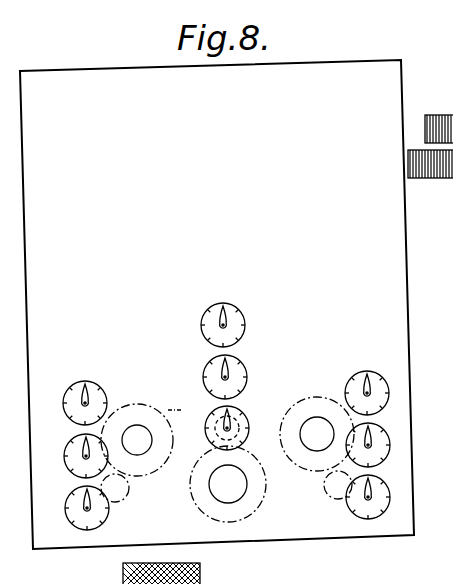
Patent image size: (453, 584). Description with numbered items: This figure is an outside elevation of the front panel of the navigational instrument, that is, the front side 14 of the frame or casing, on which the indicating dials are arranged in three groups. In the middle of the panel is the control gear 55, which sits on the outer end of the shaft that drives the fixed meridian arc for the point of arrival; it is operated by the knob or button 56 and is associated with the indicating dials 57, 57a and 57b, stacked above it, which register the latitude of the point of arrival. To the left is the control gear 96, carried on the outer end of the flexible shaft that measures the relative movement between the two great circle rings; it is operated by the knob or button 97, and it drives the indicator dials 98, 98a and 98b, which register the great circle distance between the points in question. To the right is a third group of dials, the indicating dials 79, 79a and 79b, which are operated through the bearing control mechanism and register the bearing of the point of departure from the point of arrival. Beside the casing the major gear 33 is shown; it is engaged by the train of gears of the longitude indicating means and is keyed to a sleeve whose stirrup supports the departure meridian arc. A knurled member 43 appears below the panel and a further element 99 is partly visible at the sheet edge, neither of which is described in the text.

The front side 14 is at (390, 292).
The major gear 33 is at (437, 178).
The knurled knob 43 is at (200, 573).
The control gear 55 is at (225, 494).
The knob or button 56 is at (243, 495).
The indicating dial 57 is at (244, 414).
The indicating dial 57a is at (246, 370).
The indicating dial 57b is at (245, 326).
The indicating dial 79 is at (384, 512).
The indicating dial 79a is at (385, 459).
The indicating dial 79b is at (376, 373).
The control gear 96 is at (135, 403).
The operating knob or button 97 is at (144, 427).
The indicator dial 98 is at (66, 503).
The indicator dial 98a is at (70, 441).
The indicator dial 98b is at (67, 391).
The knob 99 is at (262, 581).